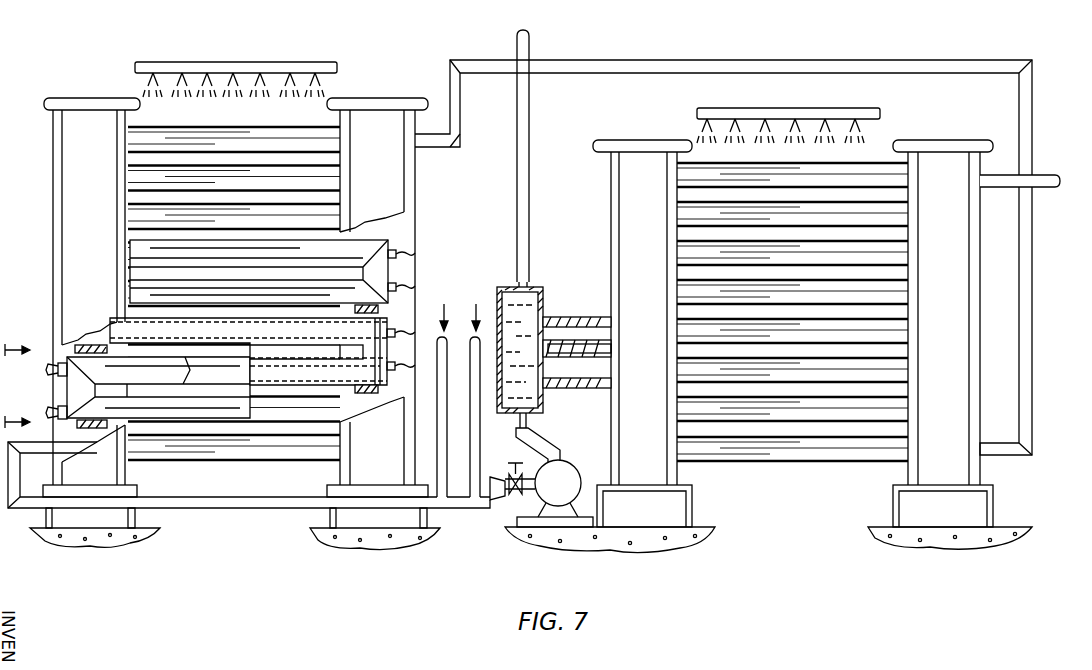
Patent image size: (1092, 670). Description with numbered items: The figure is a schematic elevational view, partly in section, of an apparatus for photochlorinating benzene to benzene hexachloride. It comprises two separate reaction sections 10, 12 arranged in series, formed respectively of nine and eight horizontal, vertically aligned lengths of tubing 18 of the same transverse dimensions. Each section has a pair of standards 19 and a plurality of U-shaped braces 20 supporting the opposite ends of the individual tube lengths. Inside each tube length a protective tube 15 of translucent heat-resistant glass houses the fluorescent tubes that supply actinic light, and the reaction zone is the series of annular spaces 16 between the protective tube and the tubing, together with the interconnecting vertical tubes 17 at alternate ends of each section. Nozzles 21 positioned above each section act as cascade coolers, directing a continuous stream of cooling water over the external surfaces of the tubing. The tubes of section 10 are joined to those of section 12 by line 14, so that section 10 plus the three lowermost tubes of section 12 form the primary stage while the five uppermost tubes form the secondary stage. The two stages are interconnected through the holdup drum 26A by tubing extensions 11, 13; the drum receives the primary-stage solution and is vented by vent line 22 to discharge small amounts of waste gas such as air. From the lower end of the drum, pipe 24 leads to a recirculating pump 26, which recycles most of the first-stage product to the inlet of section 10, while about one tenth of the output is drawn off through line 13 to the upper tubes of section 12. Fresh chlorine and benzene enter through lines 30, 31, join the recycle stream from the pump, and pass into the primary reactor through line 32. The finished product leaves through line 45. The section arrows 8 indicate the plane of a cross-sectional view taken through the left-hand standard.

The section line 8 is at (24, 388).
The reaction section 10 is at (372, 98).
The tubing extension 11 is at (584, 388).
The reaction section 12 is at (610, 138).
The tubing extension 13 is at (594, 320).
The line 14 is at (588, 60).
The protective tube 15 is at (280, 306).
The annular space 16 is at (316, 380).
The interconnecting vertical tube 17 is at (389, 343).
The tubing 18 is at (216, 261).
The standard 19 is at (53, 303).
The U-shaped brace 20 is at (100, 346).
The nozzle 21 is at (224, 62).
The vent line 22 is at (529, 198).
The pipe 24 is at (548, 441).
The recirculating pump 26 is at (566, 474).
The holdup drum 26A is at (543, 287).
The chlorine feed line 30 is at (437, 498).
The benzene feed line 31 is at (466, 500).
The feed line 32 is at (226, 508).
The product line 45 is at (1050, 175).